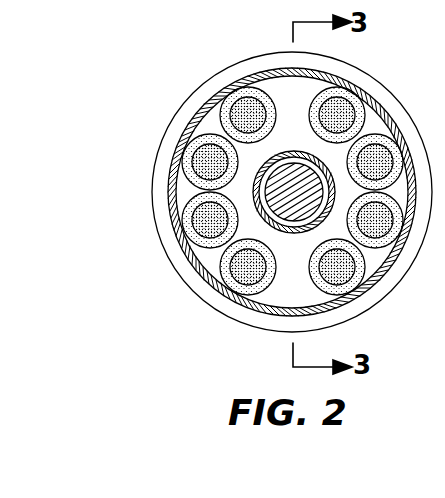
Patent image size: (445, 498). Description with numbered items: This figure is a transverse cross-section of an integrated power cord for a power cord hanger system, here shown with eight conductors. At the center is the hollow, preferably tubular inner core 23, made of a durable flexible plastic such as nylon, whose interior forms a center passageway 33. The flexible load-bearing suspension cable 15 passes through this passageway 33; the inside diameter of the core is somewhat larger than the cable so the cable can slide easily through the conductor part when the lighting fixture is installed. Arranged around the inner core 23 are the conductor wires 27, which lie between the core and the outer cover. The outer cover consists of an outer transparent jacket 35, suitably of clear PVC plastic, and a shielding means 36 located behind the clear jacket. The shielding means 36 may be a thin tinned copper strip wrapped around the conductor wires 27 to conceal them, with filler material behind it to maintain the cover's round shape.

The suspension cable 15 is at (342, 192).
The inner core 23 is at (297, 152).
The conductor wires 27 is at (255, 86).
The center passageway 33 is at (318, 170).
The outer transparent jacket 35 is at (203, 95).
The shielding means 36 is at (370, 287).